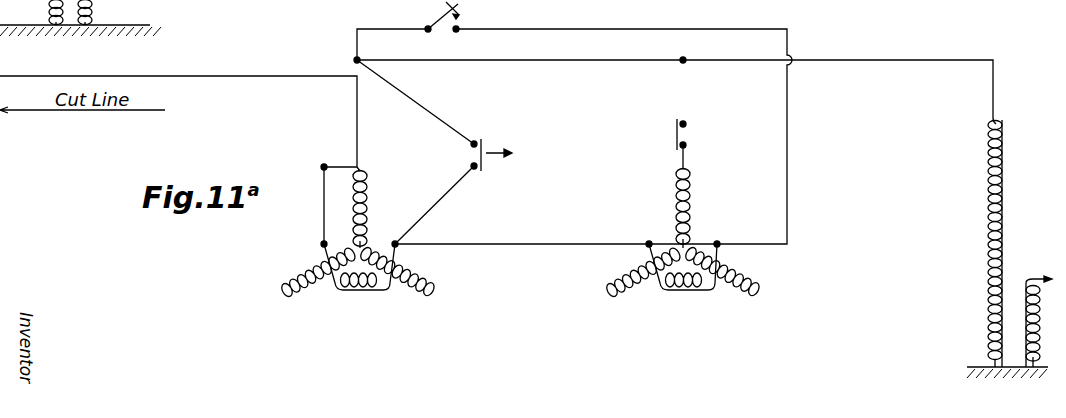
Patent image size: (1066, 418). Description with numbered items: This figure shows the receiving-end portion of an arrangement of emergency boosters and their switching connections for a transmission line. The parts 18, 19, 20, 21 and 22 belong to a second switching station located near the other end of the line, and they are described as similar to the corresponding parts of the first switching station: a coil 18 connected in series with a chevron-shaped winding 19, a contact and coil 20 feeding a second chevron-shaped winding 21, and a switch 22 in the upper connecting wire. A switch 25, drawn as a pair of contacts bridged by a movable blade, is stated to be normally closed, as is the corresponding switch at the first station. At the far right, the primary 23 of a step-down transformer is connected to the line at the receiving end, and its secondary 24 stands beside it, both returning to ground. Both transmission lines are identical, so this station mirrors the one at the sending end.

The second switching station part 18 is at (364, 212).
The second switching station part 19 is at (360, 293).
The second switching station part 20 is at (691, 188).
The second switching station part 21 is at (684, 293).
The second switching station part 22 is at (440, 18).
The primary of step-down transformer 23 is at (990, 241).
The secondary of step-down transformer 24 is at (1023, 284).
The switch 25 is at (487, 141).